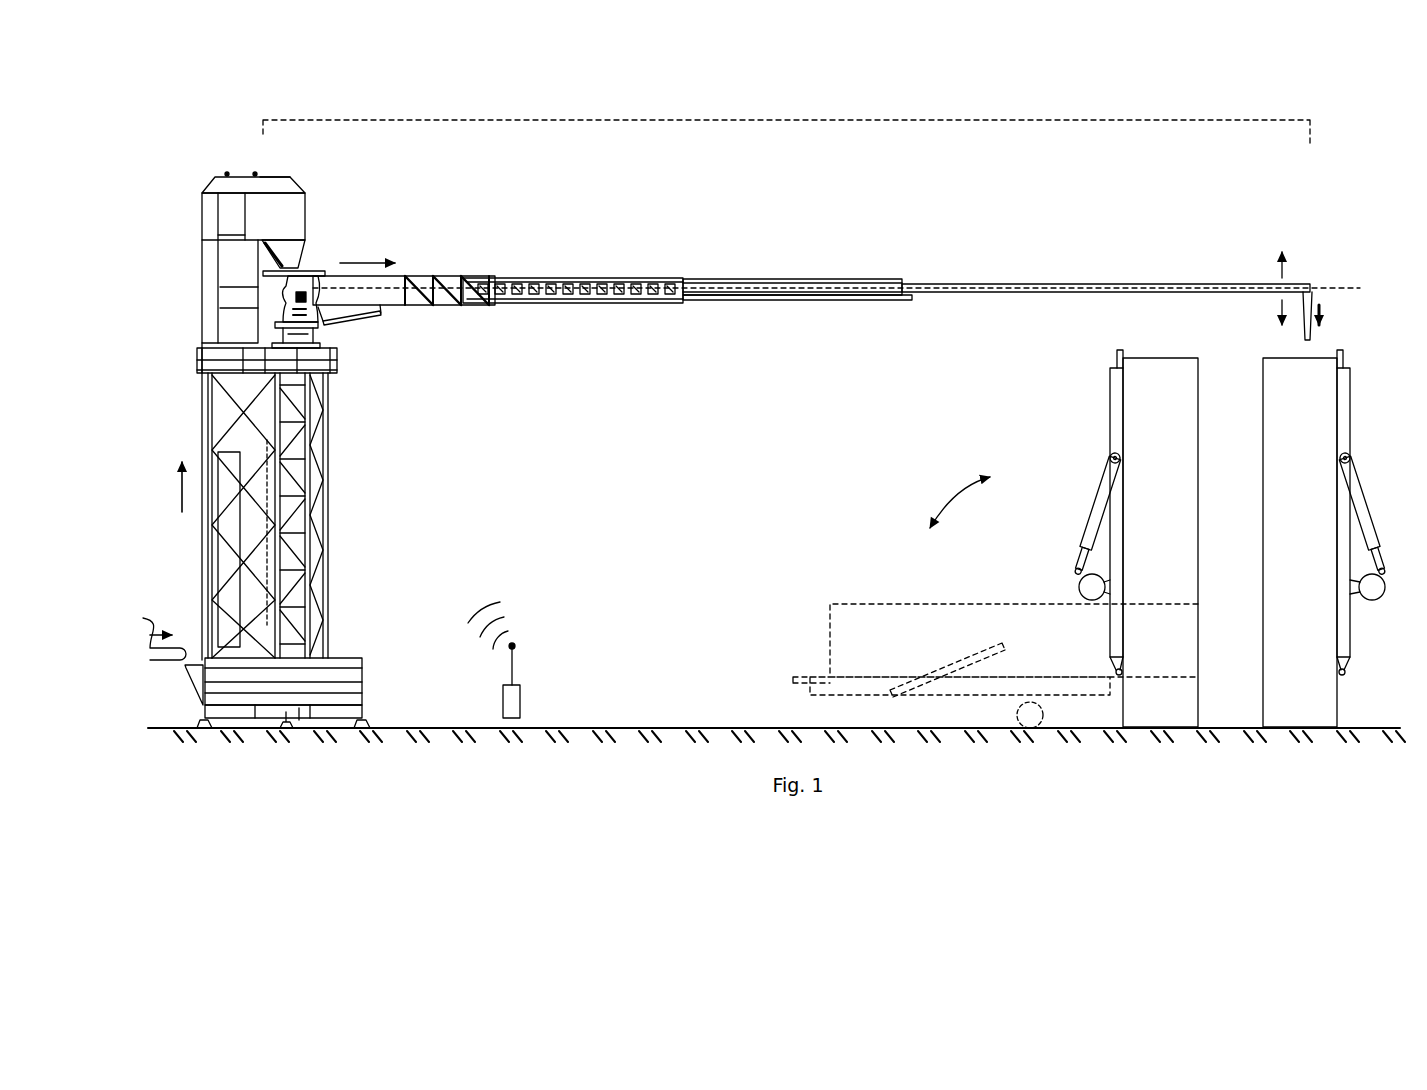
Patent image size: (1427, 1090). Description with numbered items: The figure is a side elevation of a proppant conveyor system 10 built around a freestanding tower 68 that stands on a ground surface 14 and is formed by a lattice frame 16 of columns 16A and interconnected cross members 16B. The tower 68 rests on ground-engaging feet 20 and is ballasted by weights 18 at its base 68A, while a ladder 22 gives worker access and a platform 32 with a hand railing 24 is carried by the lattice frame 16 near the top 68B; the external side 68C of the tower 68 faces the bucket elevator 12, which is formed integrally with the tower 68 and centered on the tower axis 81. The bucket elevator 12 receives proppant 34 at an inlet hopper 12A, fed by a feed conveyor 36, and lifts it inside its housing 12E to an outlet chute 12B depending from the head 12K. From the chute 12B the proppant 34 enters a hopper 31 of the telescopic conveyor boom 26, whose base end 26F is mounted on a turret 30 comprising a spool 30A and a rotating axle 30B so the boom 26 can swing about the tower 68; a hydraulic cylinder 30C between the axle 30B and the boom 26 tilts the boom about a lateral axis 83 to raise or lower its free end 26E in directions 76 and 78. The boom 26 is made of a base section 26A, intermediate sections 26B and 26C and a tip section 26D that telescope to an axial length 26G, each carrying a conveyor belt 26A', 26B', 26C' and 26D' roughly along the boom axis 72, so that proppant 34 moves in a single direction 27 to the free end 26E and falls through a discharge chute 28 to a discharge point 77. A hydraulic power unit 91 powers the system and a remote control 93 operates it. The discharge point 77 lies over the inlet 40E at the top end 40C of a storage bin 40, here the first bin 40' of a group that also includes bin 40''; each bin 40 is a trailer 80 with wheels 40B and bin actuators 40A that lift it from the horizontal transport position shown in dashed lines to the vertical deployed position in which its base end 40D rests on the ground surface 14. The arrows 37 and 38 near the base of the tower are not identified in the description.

The proppant conveyor system 10 is at (482, 190).
The bucket elevator 12 is at (202, 222).
The inlet hopper 12A is at (190, 683).
The outlet chute 12B is at (298, 252).
The housing 12E is at (258, 297).
The head 12K is at (277, 176).
The ground surface 14 is at (655, 728).
The lattice frame 16 is at (305, 515).
The columns 16A is at (328, 432).
The cross members 16B is at (312, 468).
The weights 18 is at (362, 667).
The ground-engaging feet 20 is at (368, 722).
The ladder 22 is at (312, 578).
The hand railing 24 is at (338, 368).
The telescopic conveyor boom 26 is at (812, 306).
The base section 26A is at (1106, 308).
The conveyor belt 26A' is at (1025, 254).
The intermediate section 26B is at (797, 314).
The conveyor belt 26B' is at (859, 251).
The intermediate section 26C is at (589, 309).
The conveyor belt 26C' is at (636, 257).
The tip section 26D is at (436, 313).
The conveyor belt 26D' is at (526, 248).
The free end 26E is at (1310, 268).
The base end 26F is at (290, 272).
The axial length 26G is at (768, 120).
The single direction 27 is at (390, 258).
The discharge chute 28 is at (1312, 300).
The turret 30 is at (258, 323).
The spool 30A is at (320, 331).
The rotating axle 30B is at (306, 279).
The hydraulic cylinder 30C is at (345, 318).
The hopper 31 is at (312, 276).
The platform 32 is at (232, 364).
The proppant 34 is at (1306, 344).
The feed conveyor 36 is at (163, 628).
The inflow path 37 is at (176, 630).
The lift direction 38 is at (182, 472).
The storage bin 40 is at (1223, 569).
The first storage bin 40' is at (1186, 538).
The second storage bin 40'' is at (1074, 576).
The bin actuator 40A is at (1351, 507).
The wheels 40B is at (1382, 575).
The top end 40C is at (1290, 348).
The base end 40D is at (1305, 742).
The inlet 40E is at (1298, 366).
The tower 68 is at (330, 505).
The base 68A is at (340, 721).
The top 68B is at (325, 341).
The external side 68C is at (203, 556).
The boom axis 72 is at (1130, 284).
The raising direction 76 is at (1282, 270).
The discharge point 77 is at (1340, 343).
The lowering direction 78 is at (1282, 310).
The trailer 80 is at (828, 660).
The tower axis 81 is at (270, 617).
The lateral axis 83 is at (240, 282).
The hydraulic power unit 91 is at (299, 714).
The remote control 93 is at (520, 705).